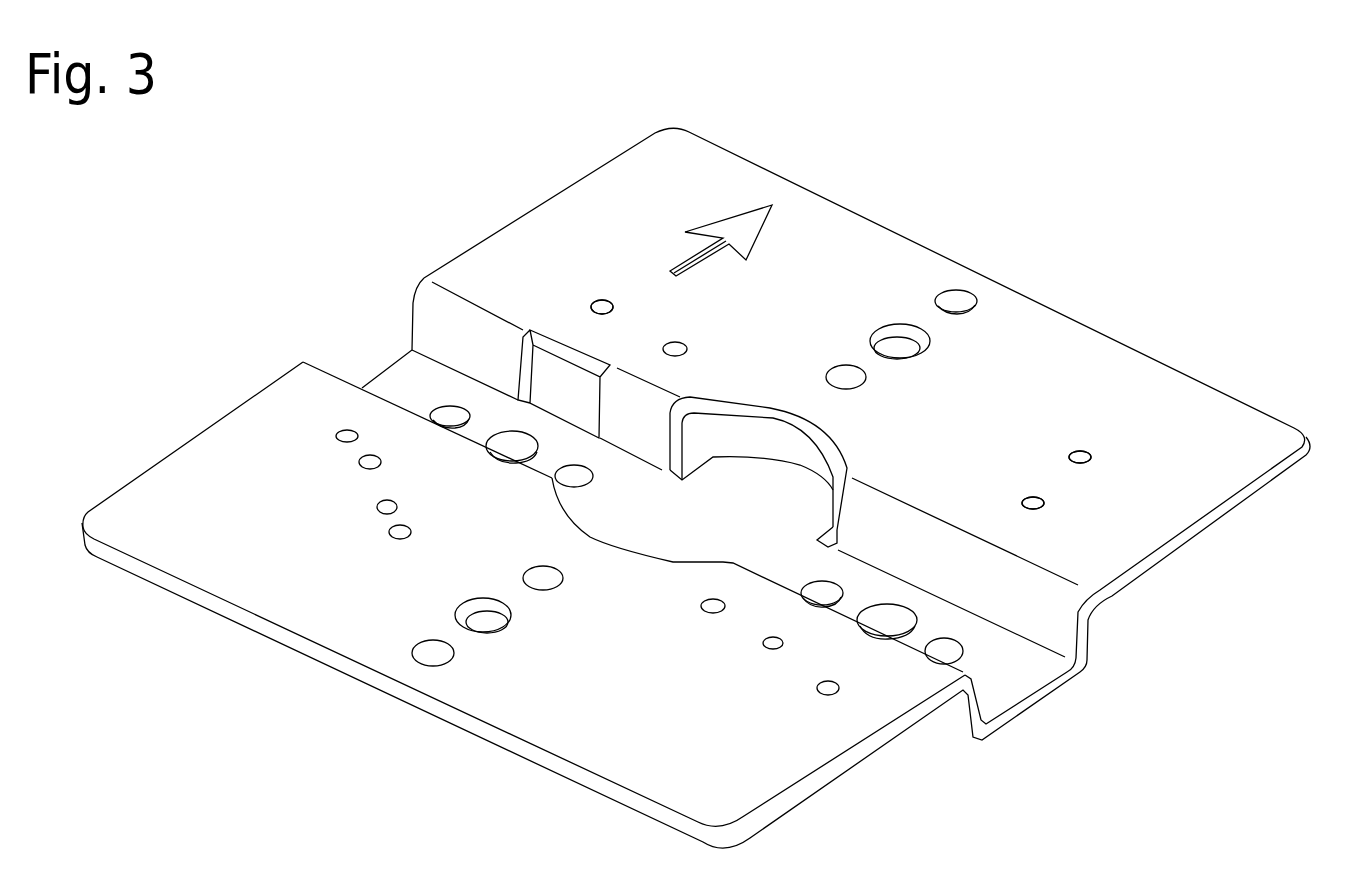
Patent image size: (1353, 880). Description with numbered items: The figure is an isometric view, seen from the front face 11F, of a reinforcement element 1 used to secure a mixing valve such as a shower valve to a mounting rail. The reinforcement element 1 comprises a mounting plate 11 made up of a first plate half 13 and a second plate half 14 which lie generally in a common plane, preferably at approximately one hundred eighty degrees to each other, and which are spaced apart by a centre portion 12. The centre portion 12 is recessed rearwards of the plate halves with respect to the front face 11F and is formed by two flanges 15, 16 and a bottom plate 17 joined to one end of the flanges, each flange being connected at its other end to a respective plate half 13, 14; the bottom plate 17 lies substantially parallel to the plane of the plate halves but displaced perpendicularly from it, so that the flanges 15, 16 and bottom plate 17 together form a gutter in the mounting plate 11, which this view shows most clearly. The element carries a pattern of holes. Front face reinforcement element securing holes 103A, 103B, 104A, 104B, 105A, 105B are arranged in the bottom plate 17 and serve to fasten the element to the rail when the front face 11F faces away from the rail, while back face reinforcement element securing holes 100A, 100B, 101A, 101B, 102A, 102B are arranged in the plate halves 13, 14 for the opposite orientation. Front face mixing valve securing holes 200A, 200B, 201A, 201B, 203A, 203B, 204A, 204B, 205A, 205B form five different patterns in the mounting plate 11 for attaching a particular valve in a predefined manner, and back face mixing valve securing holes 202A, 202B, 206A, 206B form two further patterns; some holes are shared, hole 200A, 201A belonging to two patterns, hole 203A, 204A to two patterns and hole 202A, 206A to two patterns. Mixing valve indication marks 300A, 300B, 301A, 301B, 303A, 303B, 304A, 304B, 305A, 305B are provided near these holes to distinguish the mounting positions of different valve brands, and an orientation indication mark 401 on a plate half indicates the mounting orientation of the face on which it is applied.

The reinforcement element 1 is at (200, 418).
The mounting plate 11 is at (822, 777).
The front face 11F is at (705, 783).
The centre portion 12 is at (377, 358).
The first plate half 13 is at (523, 256).
The second plate half 14 is at (146, 540).
The flange 15 is at (448, 354).
The flange 16 is at (580, 495).
The bottom plate 17 is at (721, 536).
The orientation indication mark 401 is at (740, 228).
The back face reinforcement element securing hole 100A is at (957, 302).
The back face reinforcement element securing hole 101A is at (848, 386).
The back face reinforcement element securing hole 102A is at (918, 337).
The front face reinforcement element securing hole 103A is at (585, 478).
The front face reinforcement element securing hole 104A is at (452, 408).
The front face reinforcement element securing hole 105A is at (532, 443).
The front face mixing valve securing hole 200A is at (1069, 457).
The front face mixing valve securing hole 201A is at (1080, 457).
The back face mixing valve securing hole 202A is at (591, 308).
The front face mixing valve securing hole 203A is at (1044, 503).
The front face mixing valve securing hole 204A is at (1033, 503).
The front face mixing valve securing hole 205A is at (677, 356).
The back face mixing valve securing hole 206A is at (602, 307).
The mixing valve indication mark 300A is at (1080, 398).
The mixing valve indication mark 301A is at (1167, 433).
The mixing valve indication mark 303A is at (978, 492).
The mixing valve indication mark 304A is at (1053, 518).
The mixing valve indication mark 305A is at (748, 284).
The back face reinforcement element securing hole 100B is at (564, 578).
The back face reinforcement element securing hole 101B is at (436, 666).
The back face reinforcement element securing hole 102B is at (507, 628).
The front face reinforcement element securing hole 103B is at (964, 652).
The front face reinforcement element securing hole 104B is at (805, 592).
The front face reinforcement element securing hole 105B is at (890, 614).
The front face mixing valve securing hole 200B is at (389, 532).
The front face mixing valve securing hole 201B is at (378, 510).
The back face mixing valve securing hole 202B is at (775, 650).
The front face mixing valve securing hole 203B is at (370, 468).
The front face mixing valve securing hole 204B is at (345, 430).
The front face mixing valve securing hole 205B is at (690, 580).
The back face mixing valve securing hole 206B is at (839, 684).
The mixing valve indication mark 300B is at (395, 585).
The mixing valve indication mark 301B is at (484, 518).
The mixing valve indication mark 303B is at (233, 440).
The mixing valve indication mark 304B is at (470, 492).
The mixing valve indication mark 305B is at (652, 640).